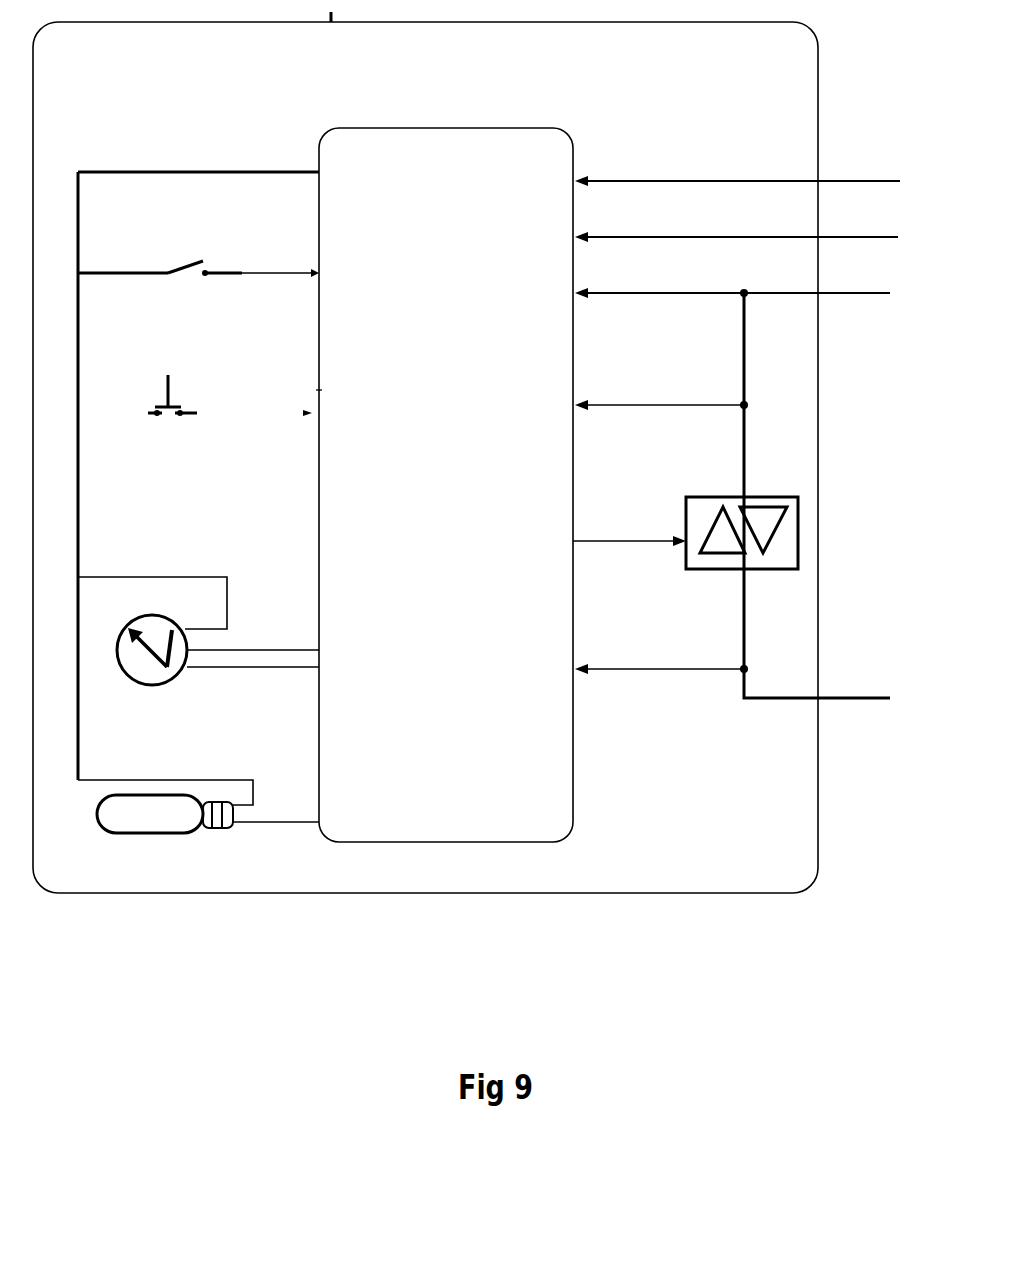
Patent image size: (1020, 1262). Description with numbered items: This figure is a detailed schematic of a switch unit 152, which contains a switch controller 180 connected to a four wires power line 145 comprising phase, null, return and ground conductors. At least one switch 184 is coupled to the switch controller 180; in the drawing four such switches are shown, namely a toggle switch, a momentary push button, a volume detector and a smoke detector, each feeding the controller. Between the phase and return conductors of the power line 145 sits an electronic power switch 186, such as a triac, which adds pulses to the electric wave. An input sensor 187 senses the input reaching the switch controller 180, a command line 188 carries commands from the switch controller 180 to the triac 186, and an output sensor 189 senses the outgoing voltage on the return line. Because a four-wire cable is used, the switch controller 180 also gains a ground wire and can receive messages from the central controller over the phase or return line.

The switch unit 152 is at (425, 452).
The switch controller 180 is at (444, 485).
The switch 184 is at (198, 571).
The four wires power line 145 is at (750, 424).
The electronic power switch 186 is at (745, 515).
The input sensor 187 is at (661, 372).
The command line 188 is at (629, 514).
The output sensor 189 is at (661, 632).